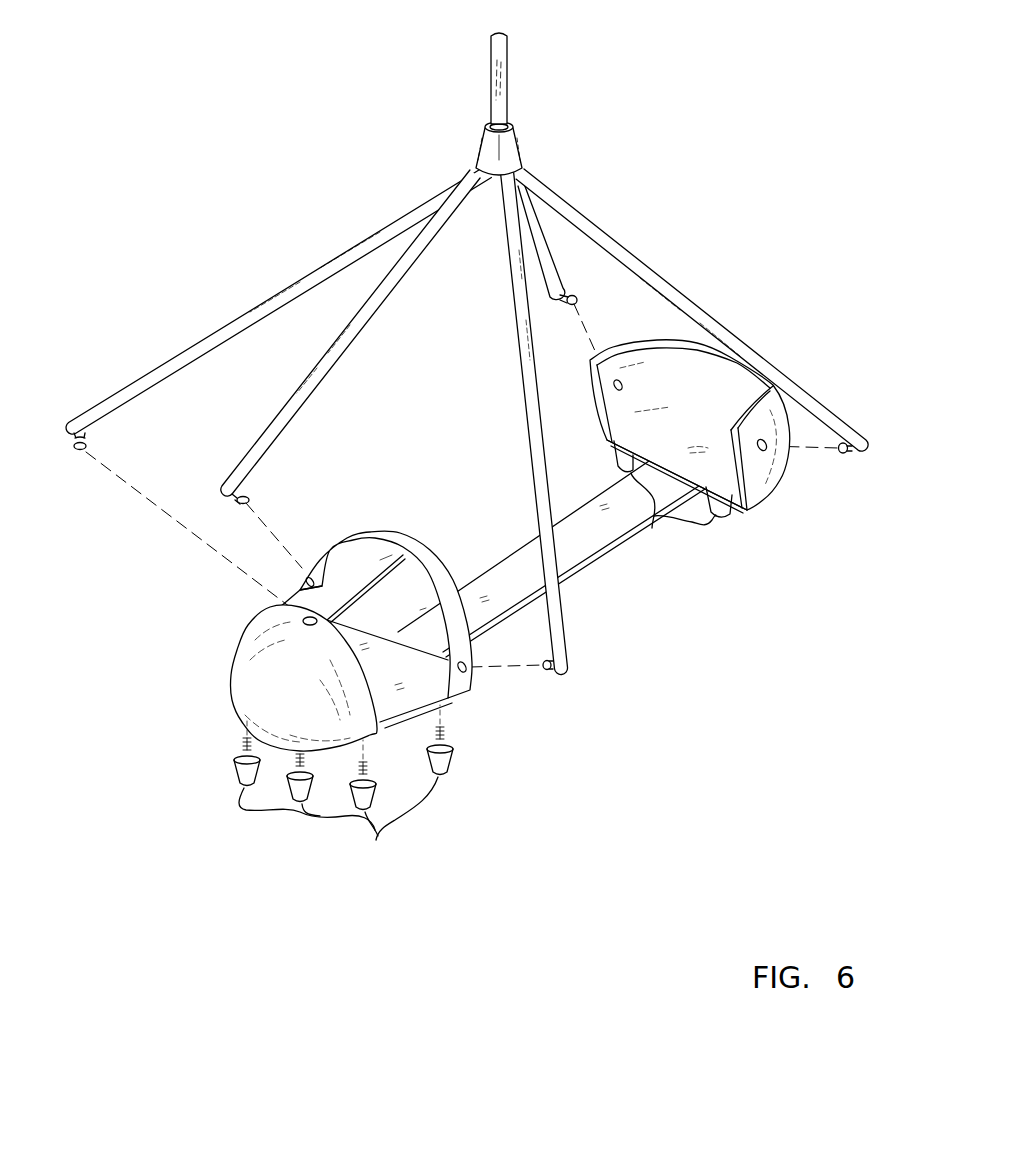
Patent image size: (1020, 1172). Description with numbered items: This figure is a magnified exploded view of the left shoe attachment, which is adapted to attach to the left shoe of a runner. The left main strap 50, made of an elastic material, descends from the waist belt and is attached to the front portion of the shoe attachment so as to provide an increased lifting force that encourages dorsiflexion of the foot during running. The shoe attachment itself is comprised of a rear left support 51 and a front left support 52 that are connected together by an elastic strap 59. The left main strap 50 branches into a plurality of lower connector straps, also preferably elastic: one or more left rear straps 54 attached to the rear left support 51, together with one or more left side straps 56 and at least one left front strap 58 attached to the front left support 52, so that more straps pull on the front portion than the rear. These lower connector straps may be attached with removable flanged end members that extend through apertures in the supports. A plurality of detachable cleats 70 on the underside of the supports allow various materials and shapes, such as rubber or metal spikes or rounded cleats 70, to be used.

The left main strap 50 is at (507, 58).
The rear left support 51 is at (770, 500).
The front left support 52 is at (233, 657).
The left rear straps 54 is at (547, 247).
The left side straps 56 is at (370, 318).
The left front strap 58 is at (217, 335).
The elastic strap 59 is at (583, 567).
The detachable cleats 70 is at (376, 836).